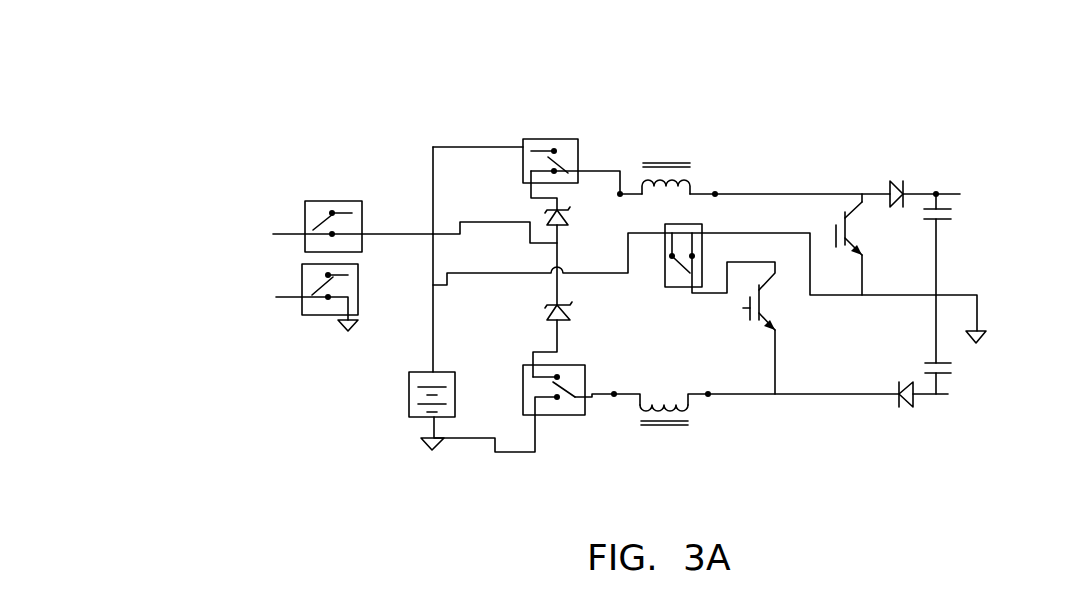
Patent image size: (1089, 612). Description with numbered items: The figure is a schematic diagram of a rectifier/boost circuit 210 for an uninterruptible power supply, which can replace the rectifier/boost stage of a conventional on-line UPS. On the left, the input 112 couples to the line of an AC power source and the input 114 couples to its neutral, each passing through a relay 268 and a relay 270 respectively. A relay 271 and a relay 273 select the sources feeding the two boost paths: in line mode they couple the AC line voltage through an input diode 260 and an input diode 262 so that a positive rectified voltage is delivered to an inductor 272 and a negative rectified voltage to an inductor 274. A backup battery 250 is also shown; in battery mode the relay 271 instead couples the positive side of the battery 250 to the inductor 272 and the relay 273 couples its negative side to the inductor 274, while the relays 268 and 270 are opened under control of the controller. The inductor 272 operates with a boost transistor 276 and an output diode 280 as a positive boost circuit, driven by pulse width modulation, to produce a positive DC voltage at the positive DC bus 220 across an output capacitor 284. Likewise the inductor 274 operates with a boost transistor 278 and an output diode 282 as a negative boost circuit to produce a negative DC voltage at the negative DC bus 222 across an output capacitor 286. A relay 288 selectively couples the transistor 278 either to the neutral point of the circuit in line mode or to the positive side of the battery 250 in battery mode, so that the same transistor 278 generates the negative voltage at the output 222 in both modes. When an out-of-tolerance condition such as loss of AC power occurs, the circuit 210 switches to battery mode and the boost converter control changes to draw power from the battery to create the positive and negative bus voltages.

The rectifier/boost circuit 210 is at (842, 86).
The input 112 is at (392, 235).
The input 114 is at (278, 299).
The relay 268 is at (318, 201).
The relay 270 is at (310, 315).
The relay 271 is at (535, 139).
The input diode 260 is at (568, 218).
The input diode 262 is at (568, 312).
The backup battery 250 is at (409, 393).
The relay 273 is at (552, 415).
The inductor 272 is at (655, 163).
The inductor 274 is at (670, 428).
The relay 288 is at (677, 288).
The boost transistor 276 is at (855, 234).
The boost transistor 278 is at (765, 303).
The output diode 280 is at (895, 178).
The positive DC bus 220 is at (938, 192).
The output capacitor 284 is at (957, 215).
The output capacitor 286 is at (967, 369).
The negative DC bus 222 is at (955, 395).
The output diode 282 is at (903, 408).